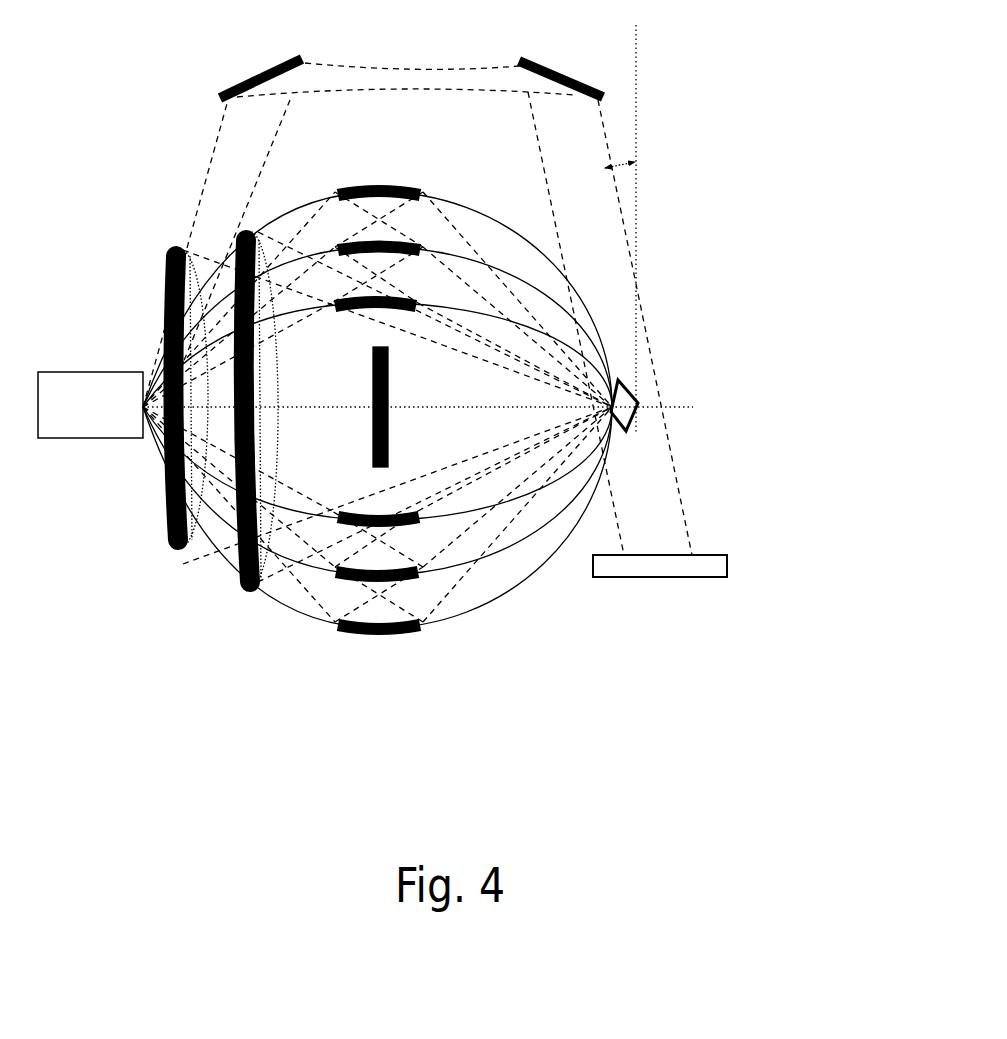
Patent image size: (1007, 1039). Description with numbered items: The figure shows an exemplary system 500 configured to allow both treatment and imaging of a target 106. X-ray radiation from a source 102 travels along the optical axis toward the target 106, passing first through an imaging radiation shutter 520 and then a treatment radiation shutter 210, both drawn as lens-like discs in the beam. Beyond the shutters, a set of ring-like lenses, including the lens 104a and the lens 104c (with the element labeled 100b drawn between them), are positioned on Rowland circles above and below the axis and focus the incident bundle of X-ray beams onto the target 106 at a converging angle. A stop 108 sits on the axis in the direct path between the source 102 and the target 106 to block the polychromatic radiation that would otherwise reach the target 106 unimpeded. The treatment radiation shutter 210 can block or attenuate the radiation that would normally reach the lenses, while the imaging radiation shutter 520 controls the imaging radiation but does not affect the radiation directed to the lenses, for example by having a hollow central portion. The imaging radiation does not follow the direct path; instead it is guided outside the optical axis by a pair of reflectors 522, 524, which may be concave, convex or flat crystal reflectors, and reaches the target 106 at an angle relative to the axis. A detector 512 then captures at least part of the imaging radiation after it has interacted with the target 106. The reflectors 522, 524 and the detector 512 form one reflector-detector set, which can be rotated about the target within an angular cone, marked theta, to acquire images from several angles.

The system 500 is at (745, 120).
The source 102 is at (90, 405).
The imaging radiation shutter 520 is at (168, 522).
The treatment radiation shutter 210 is at (278, 392).
The lens 104c is at (404, 186).
The mirror 100b is at (364, 240).
The lens 104a is at (334, 301).
The stop 108 is at (392, 440).
The target 106 is at (640, 392).
The detector 512 is at (645, 580).
The reflector 522 is at (262, 66).
The reflector 524 is at (578, 80).